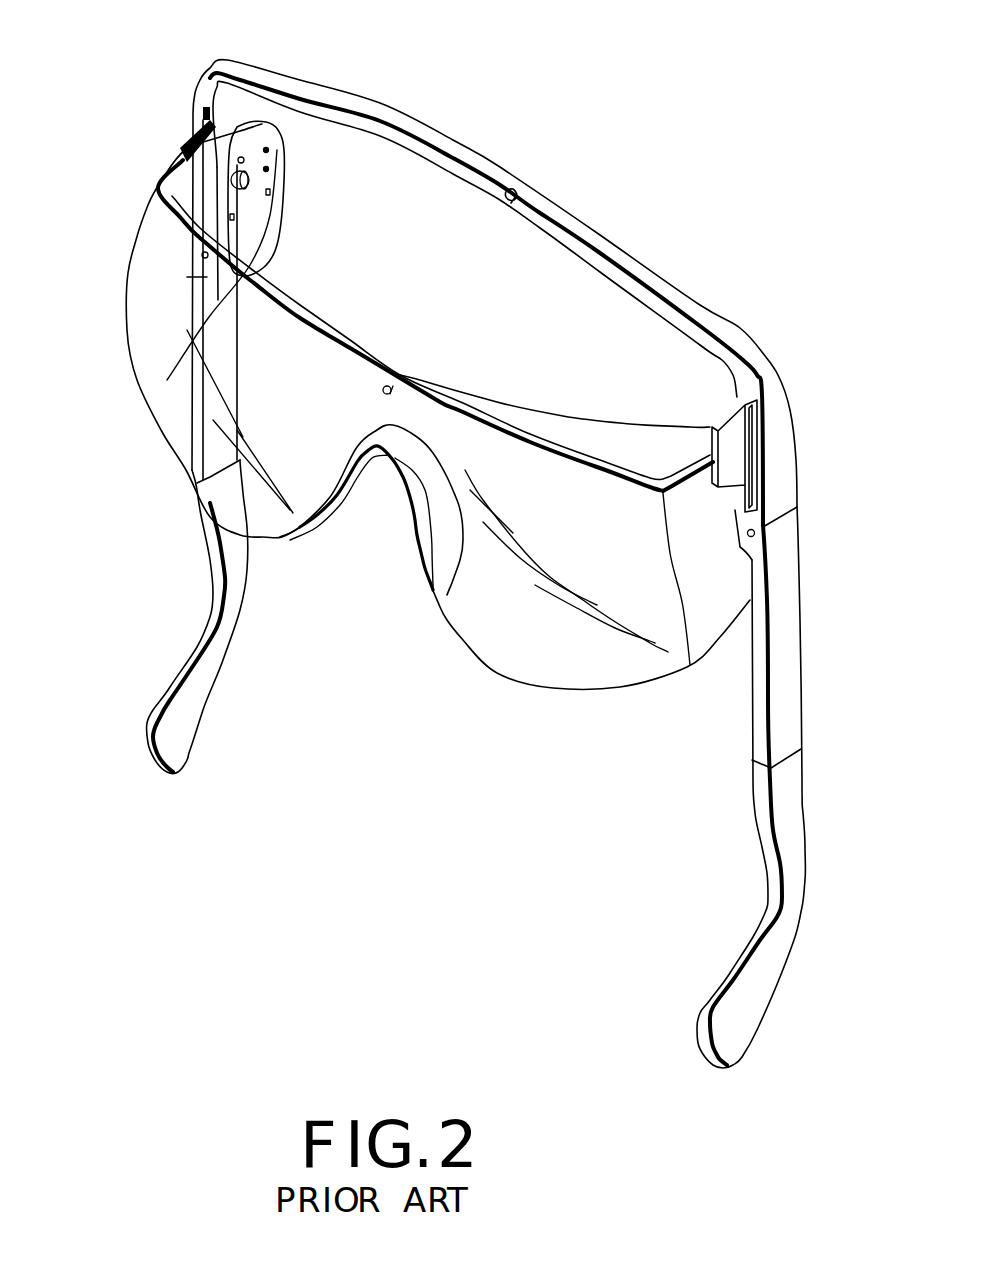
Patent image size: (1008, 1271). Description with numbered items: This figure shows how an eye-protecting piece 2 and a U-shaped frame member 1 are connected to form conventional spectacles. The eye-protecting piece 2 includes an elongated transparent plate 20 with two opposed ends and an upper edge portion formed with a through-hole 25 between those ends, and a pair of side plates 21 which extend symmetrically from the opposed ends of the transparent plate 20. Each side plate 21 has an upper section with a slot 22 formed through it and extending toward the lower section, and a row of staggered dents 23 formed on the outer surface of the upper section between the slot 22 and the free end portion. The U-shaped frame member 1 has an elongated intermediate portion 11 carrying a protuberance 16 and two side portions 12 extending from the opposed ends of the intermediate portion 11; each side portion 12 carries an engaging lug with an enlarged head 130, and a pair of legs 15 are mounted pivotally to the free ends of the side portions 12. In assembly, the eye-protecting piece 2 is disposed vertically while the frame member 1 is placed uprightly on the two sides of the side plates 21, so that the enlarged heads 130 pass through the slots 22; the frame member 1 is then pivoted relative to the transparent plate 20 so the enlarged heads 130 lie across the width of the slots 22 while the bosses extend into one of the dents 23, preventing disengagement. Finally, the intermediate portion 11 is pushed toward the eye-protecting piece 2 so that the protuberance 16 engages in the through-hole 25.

The U-shaped frame member 1 is at (668, 238).
The eye-protecting piece 2 is at (478, 678).
The intermediate portion 11 is at (582, 223).
The side portions 12 is at (207, 97).
The legs 15 is at (217, 563).
The protuberance 16 is at (507, 203).
The transparent plate 20 is at (157, 350).
The side plates 21 is at (263, 217).
The slot 22 is at (237, 170).
The dents 23 is at (268, 148).
The through-hole 25 is at (407, 380).
The enlarged head 130 is at (253, 183).